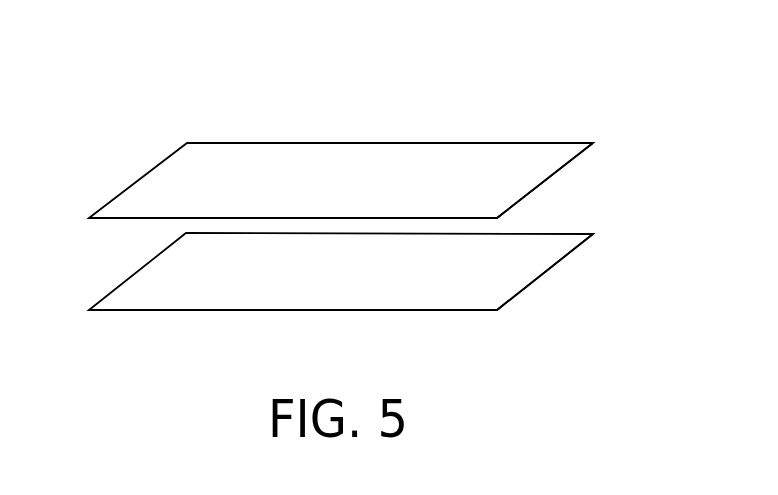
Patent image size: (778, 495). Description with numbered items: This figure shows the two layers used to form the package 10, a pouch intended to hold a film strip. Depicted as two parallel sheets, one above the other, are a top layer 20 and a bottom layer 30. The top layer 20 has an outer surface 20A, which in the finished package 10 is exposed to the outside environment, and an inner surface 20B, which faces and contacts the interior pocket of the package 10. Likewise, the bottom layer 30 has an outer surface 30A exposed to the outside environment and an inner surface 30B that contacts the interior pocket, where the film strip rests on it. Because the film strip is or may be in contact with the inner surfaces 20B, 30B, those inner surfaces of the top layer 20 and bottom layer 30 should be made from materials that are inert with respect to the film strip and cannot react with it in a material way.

The package 10 is at (565, 84).
The top layer 20 is at (124, 172).
The outer surface of top layer 20A is at (407, 162).
The inner surface of top layer 20B is at (578, 180).
The bottom layer 30 is at (107, 281).
The outer surface of bottom layer 30A is at (376, 324).
The inner surface of bottom layer 30B is at (557, 246).